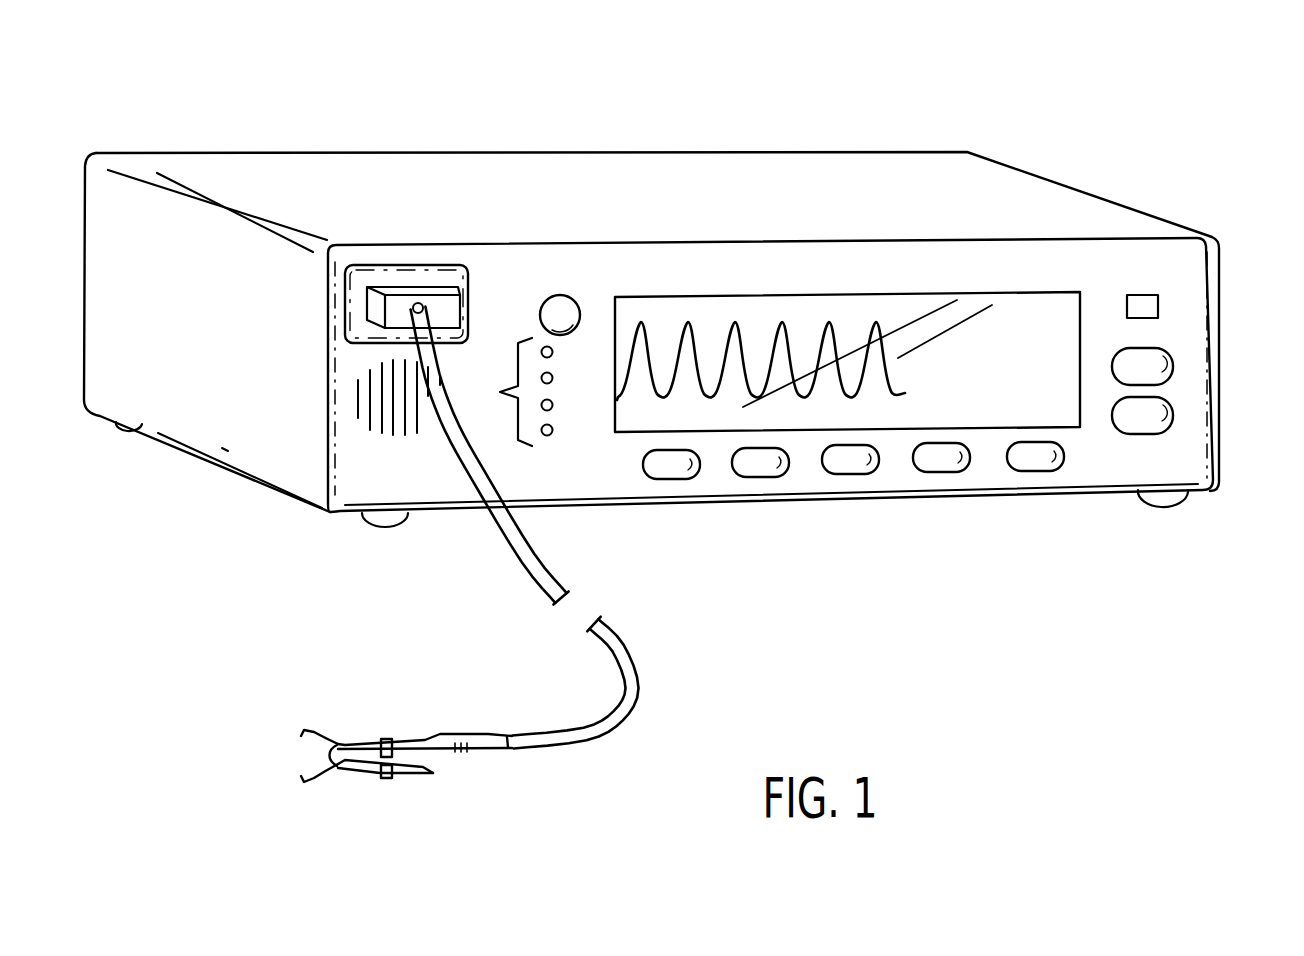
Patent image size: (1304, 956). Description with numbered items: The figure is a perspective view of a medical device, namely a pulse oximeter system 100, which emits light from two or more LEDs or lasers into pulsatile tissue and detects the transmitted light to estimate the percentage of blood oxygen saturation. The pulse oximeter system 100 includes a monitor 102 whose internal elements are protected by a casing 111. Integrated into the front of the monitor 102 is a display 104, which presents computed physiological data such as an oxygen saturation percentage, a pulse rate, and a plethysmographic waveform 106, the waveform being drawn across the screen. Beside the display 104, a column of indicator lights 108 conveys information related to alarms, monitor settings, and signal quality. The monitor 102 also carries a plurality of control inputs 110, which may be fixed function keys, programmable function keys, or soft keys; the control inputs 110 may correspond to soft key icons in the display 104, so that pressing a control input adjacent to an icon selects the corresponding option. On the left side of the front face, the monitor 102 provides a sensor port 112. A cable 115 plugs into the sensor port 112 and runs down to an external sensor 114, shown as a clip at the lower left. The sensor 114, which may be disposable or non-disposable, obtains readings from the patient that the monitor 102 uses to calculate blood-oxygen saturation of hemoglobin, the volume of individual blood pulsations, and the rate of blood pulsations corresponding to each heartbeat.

The pulse oximeter system 100 is at (1106, 186).
The monitor 102 is at (310, 136).
The display 104 is at (810, 305).
The plethysmographic waveform 106 is at (688, 328).
The indicator lights 108 is at (500, 392).
The control inputs 110 is at (572, 294).
The casing 111 is at (1128, 216).
The sensor port 112 is at (397, 290).
The sensor 114 is at (437, 706).
The cable 115 is at (630, 654).